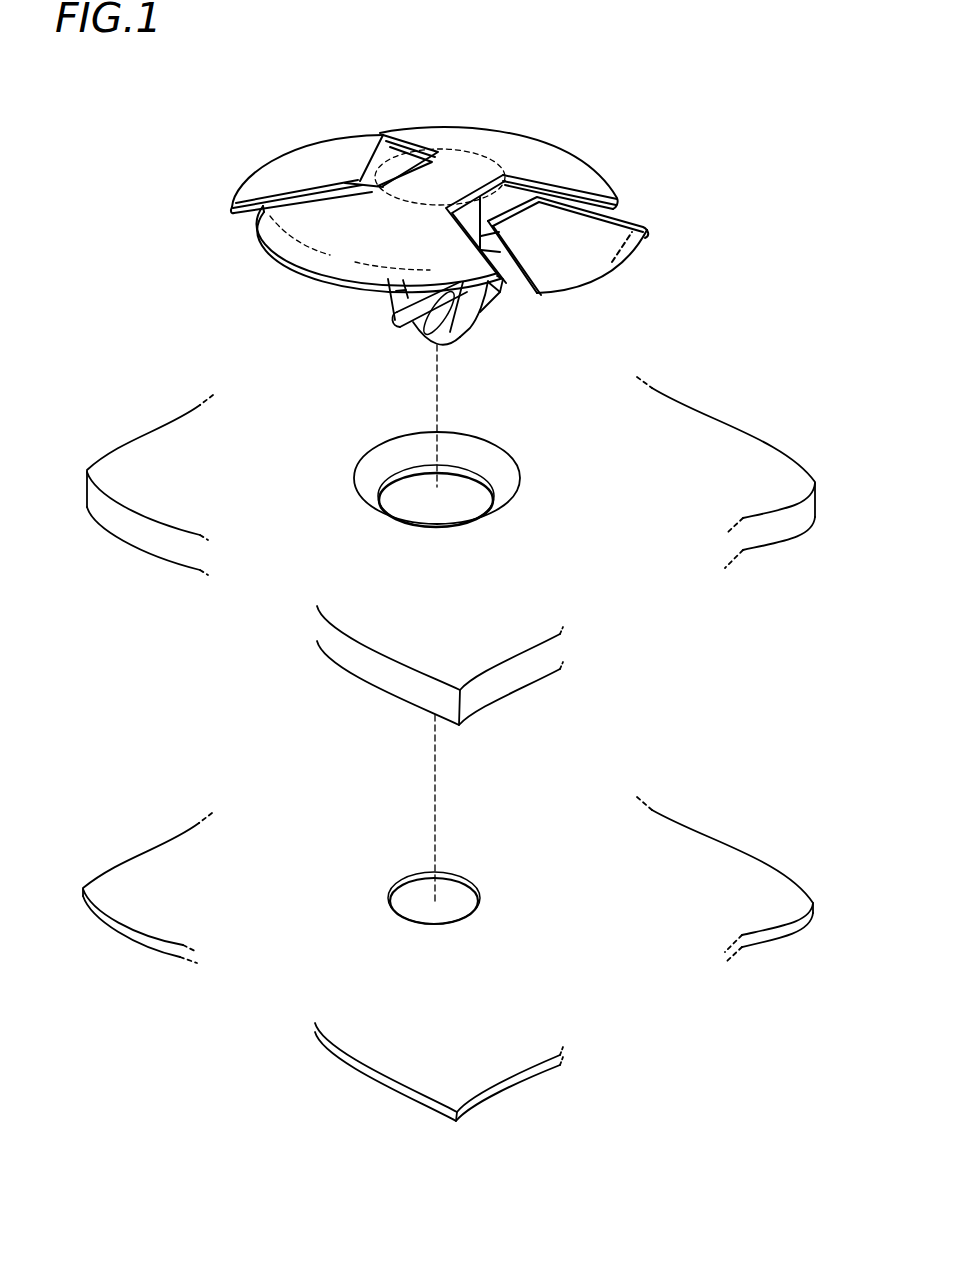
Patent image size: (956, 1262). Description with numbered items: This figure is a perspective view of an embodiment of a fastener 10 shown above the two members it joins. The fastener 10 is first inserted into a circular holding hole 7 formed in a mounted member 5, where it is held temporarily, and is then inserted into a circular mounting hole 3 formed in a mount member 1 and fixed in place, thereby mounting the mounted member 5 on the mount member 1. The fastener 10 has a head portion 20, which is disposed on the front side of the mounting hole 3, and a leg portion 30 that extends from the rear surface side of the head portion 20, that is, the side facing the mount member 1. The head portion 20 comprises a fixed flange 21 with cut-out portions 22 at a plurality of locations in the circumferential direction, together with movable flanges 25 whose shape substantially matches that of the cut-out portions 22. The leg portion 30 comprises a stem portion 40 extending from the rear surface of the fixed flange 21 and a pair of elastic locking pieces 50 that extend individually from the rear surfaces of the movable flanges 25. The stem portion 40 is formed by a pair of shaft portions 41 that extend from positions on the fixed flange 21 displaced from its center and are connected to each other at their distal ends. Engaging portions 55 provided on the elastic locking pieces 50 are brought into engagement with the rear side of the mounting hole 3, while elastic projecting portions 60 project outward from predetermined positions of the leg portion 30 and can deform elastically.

The mount member 1 is at (710, 860).
The mounting hole 3 is at (463, 877).
The mounted member 5 is at (760, 453).
The holding hole 7 is at (503, 467).
The fastener 10 is at (509, 105).
The head portion 20 is at (440, 121).
The fixed flange 21 is at (580, 163).
The cut-out portions 22 is at (542, 180).
The movable flanges 25 is at (293, 170).
The leg portion 30 is at (455, 348).
The stem portion 40 is at (378, 293).
The shaft portions 41 is at (425, 297).
The elastic locking pieces 50 is at (463, 315).
The engaging portions 55 is at (490, 292).
The elastic projecting portions 60 is at (397, 328).